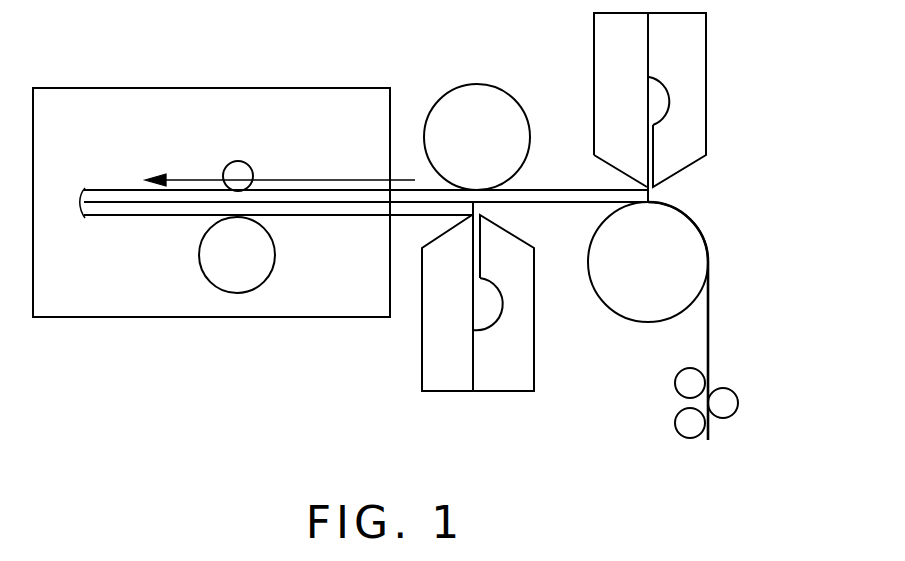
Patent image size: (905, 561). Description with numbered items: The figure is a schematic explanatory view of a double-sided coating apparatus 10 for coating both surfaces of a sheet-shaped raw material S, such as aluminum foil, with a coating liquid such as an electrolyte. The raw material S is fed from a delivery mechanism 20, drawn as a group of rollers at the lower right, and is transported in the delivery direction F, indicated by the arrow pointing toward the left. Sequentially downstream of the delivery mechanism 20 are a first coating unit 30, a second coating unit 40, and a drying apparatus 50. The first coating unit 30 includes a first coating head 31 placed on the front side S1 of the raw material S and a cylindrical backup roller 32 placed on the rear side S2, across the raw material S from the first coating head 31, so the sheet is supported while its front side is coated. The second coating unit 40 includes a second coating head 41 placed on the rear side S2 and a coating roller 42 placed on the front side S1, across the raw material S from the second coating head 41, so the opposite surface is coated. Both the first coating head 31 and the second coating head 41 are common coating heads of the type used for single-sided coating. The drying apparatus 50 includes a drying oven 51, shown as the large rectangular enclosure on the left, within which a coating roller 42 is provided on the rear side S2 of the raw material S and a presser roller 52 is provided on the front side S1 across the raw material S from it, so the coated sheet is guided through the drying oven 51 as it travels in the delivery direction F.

The double-sided coating apparatus 10 is at (338, 82).
The delivery mechanism 20 is at (672, 367).
The first coating unit 30 is at (707, 125).
The first coating head 31 is at (697, 45).
The backup roller 32 is at (608, 312).
The second coating unit 40 is at (440, 393).
The second coating head 41 is at (500, 393).
The coating roller 42 is at (237, 293).
The drying apparatus 50 is at (158, 318).
The drying oven 51 is at (75, 307).
The presser roller 52 is at (240, 161).
The delivery direction F is at (318, 178).
The raw material S is at (711, 312).
The front side S1 is at (711, 348).
The rear side S2 is at (563, 204).